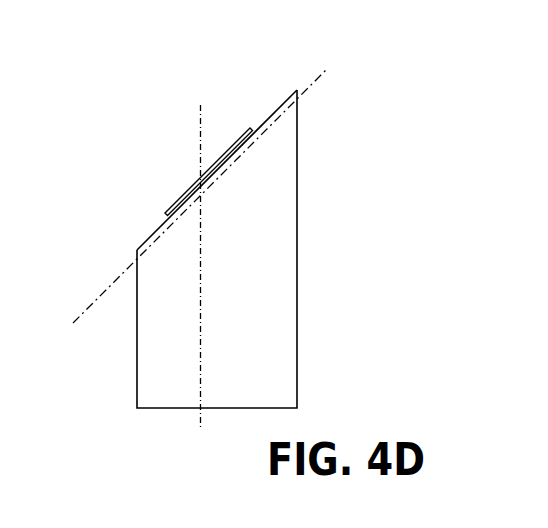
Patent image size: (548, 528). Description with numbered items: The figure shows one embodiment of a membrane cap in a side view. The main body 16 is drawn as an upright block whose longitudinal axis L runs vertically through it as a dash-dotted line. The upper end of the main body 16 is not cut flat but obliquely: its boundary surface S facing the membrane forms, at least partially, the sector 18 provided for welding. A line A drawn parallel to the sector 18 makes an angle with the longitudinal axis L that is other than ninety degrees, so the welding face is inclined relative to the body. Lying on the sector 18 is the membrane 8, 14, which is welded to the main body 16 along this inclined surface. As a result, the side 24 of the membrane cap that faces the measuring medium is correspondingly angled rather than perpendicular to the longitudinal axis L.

The main body 16 is at (283, 375).
The sector 18 is at (270, 103).
The membrane 8 is at (176, 165).
The membrane 14 is at (165, 177).
The side facing the measuring medium 24 is at (187, 132).
The boundary surface S is at (140, 220).
The line parallel to the sector A is at (204, 195).
The longitudinal axis L is at (213, 267).